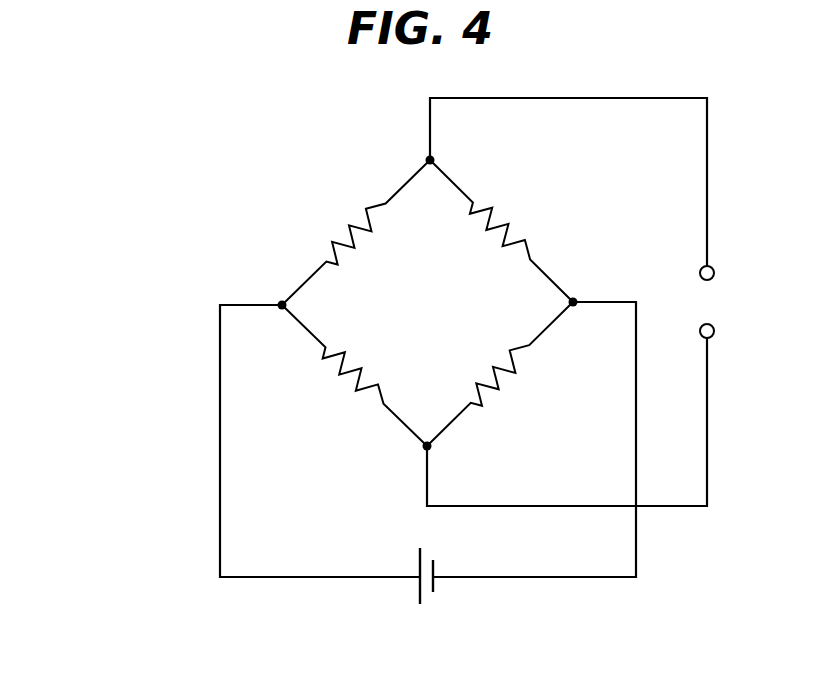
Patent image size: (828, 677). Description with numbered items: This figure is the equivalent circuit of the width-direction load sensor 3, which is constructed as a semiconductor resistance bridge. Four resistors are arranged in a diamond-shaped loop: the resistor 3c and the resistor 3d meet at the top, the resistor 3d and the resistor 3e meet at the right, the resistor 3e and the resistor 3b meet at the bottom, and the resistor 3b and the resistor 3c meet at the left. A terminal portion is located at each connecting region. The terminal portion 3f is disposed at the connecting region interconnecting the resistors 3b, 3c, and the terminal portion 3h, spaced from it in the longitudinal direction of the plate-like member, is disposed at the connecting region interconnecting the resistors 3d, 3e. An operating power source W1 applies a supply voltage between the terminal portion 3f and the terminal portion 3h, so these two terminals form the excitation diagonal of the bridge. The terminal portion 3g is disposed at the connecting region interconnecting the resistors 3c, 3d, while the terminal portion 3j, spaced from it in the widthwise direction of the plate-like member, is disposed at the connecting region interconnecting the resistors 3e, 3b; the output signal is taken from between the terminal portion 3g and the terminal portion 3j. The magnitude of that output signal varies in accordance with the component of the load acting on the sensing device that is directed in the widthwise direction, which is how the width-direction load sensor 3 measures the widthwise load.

The width-direction load sensor 3 is at (200, 310).
The resistor 3b is at (354, 375).
The resistor 3c is at (356, 232).
The resistor 3d is at (501, 231).
The resistor 3e is at (500, 374).
The terminal portion 3f is at (282, 305).
The terminal portion 3g is at (430, 160).
The terminal portion 3h is at (573, 302).
The terminal portion 3j is at (427, 446).
The operating power source W1 is at (434, 594).